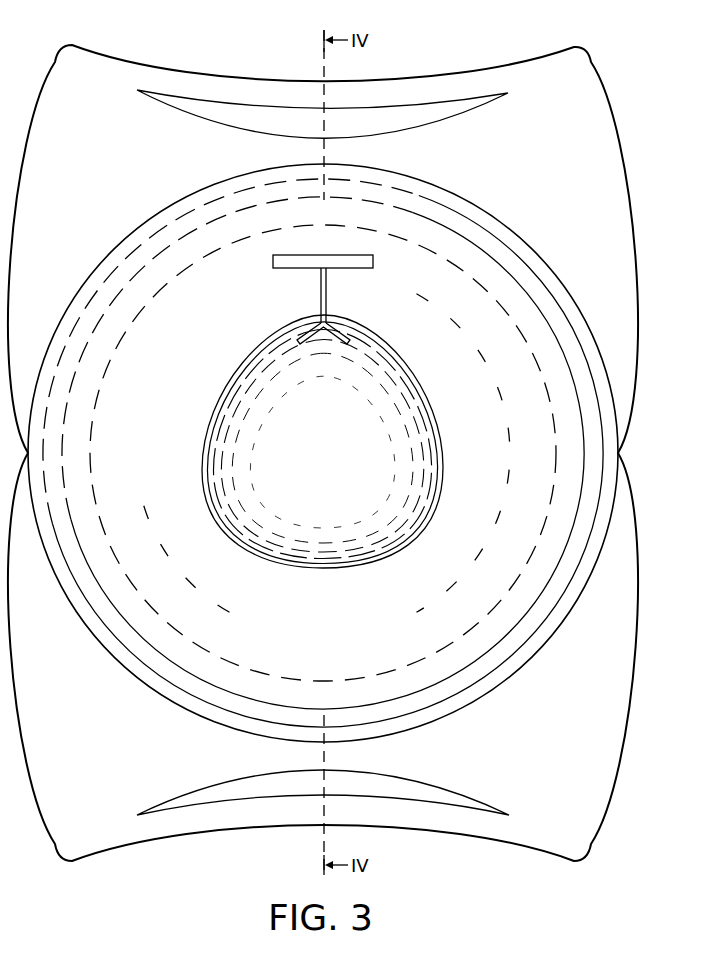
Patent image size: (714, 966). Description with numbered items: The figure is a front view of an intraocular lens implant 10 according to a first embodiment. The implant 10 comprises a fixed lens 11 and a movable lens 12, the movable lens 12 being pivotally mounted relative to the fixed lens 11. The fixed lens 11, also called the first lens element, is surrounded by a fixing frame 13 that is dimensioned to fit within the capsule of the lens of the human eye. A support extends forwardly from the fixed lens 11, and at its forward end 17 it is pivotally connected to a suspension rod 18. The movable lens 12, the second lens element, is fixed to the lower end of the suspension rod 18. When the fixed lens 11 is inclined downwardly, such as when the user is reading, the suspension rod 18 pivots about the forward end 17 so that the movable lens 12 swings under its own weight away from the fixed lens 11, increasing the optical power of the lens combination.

The intraocular lens implant 10 is at (621, 46).
The fixed lens 11 is at (147, 480).
The movable lens 12 is at (335, 467).
The fixing frame 13 is at (600, 116).
The forward end 17 is at (374, 262).
The suspension rod 18 is at (320, 293).